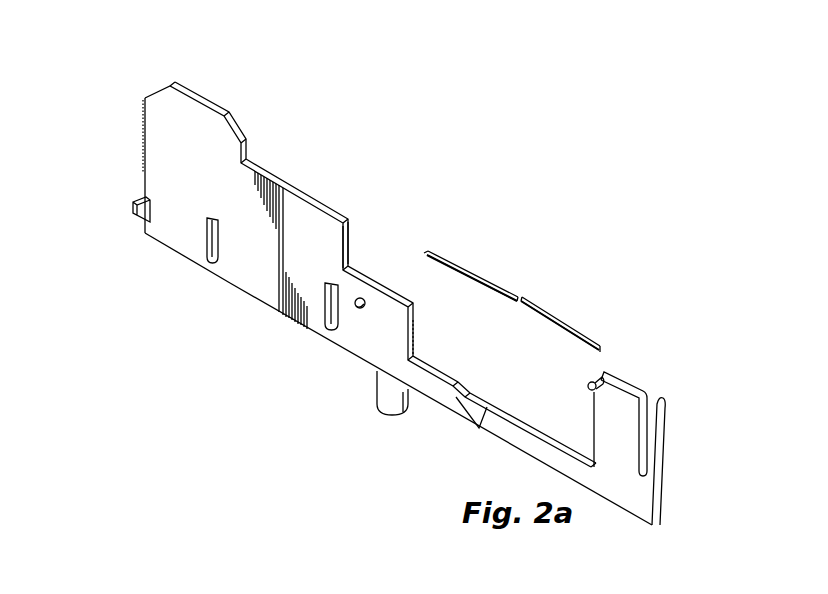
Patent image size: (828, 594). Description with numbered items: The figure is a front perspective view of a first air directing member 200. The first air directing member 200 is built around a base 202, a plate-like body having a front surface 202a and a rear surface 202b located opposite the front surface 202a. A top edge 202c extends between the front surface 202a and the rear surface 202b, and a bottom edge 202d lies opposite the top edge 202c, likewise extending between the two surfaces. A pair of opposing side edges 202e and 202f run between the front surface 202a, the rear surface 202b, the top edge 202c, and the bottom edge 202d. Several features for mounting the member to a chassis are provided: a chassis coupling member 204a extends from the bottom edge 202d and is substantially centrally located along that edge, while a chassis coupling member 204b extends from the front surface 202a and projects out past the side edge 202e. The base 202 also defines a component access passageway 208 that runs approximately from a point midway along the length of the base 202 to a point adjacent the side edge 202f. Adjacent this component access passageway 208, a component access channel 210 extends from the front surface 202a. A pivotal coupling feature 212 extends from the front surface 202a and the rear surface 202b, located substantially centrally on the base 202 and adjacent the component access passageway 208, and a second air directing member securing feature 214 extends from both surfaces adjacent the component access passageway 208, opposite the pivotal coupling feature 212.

The first air directing member 200 is at (437, 210).
The base 202 is at (161, 87).
The front surface 202a is at (175, 245).
The rear surface 202b is at (333, 208).
The top edge 202c is at (293, 185).
The bottom edge 202d is at (260, 303).
The side edge 202e is at (145, 158).
The side edge 202f is at (652, 403).
The chassis coupling member 204a is at (373, 388).
The chassis coupling member 204b is at (140, 209).
The component access passageway 208 is at (512, 301).
The component access channel 210 is at (466, 412).
The pivotal coupling feature 212 is at (366, 309).
The second air directing member securing feature 214 is at (590, 389).